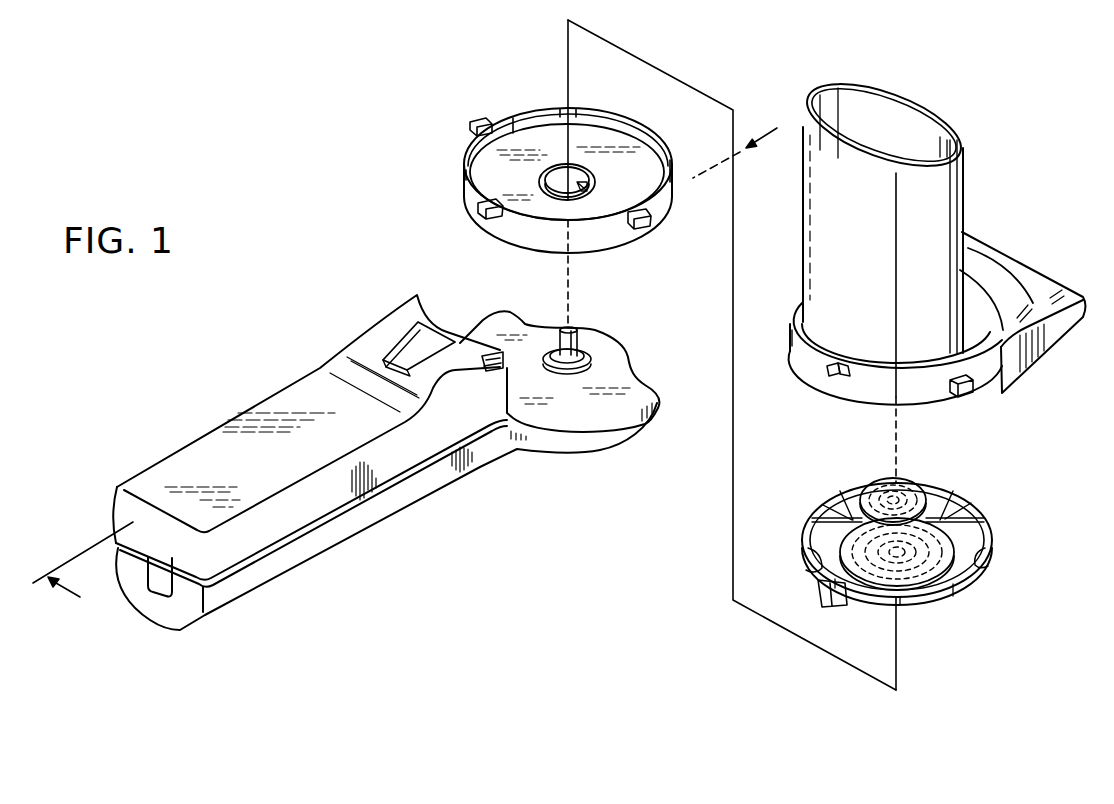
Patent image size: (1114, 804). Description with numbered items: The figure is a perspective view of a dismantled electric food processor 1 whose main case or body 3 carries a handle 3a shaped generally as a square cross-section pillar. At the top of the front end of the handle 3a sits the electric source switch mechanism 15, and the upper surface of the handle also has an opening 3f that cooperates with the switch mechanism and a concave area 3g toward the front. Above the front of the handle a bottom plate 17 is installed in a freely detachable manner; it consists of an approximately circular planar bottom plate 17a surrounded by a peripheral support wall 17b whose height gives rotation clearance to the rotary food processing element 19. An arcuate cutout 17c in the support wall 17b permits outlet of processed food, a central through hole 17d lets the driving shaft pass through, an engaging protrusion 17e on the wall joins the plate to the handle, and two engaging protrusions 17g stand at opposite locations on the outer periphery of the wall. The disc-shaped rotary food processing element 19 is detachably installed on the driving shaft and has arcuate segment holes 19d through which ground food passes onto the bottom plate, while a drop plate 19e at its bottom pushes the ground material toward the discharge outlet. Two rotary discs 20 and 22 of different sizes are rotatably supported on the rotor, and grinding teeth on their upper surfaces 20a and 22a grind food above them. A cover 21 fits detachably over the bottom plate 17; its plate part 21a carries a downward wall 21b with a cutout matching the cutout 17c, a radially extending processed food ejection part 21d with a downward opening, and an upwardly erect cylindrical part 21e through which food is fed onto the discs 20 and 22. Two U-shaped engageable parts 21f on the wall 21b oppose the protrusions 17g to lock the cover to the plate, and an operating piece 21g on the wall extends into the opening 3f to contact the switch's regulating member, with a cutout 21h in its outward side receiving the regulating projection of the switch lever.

The electric food processor 1 is at (298, 174).
The main case or body 3 is at (400, 507).
The handle 3a is at (312, 512).
The opening 3f is at (492, 370).
The concave area 3g is at (430, 354).
The electric source switch mechanism 15 is at (400, 348).
The bottom plate 17 is at (657, 223).
The planar bottom plate 17a is at (623, 150).
The peripheral support wall 17b is at (530, 120).
The arcuate cutout 17c is at (570, 114).
The through hole 17d is at (593, 187).
The engaging protrusion 17e is at (480, 223).
The engaging protrusions 17g is at (476, 124).
The rotary food processing element 19 is at (993, 522).
The arcuate segment holes 19d is at (990, 555).
The drop plate 19e is at (833, 593).
The rotary disc 20 is at (948, 593).
The upper surface of disc 20a is at (917, 582).
The cover 21 is at (925, 392).
The plate part 21a is at (970, 303).
The downward wall 21b is at (805, 350).
The processed food ejection part 21d is at (1047, 343).
The cylindrical part 21e is at (861, 210).
The engageable parts 21f is at (970, 396).
The operating piece 21g is at (833, 378).
The cutout 21h is at (841, 378).
The rotary disc 22 is at (907, 484).
The upper surface of disc 22a is at (878, 486).